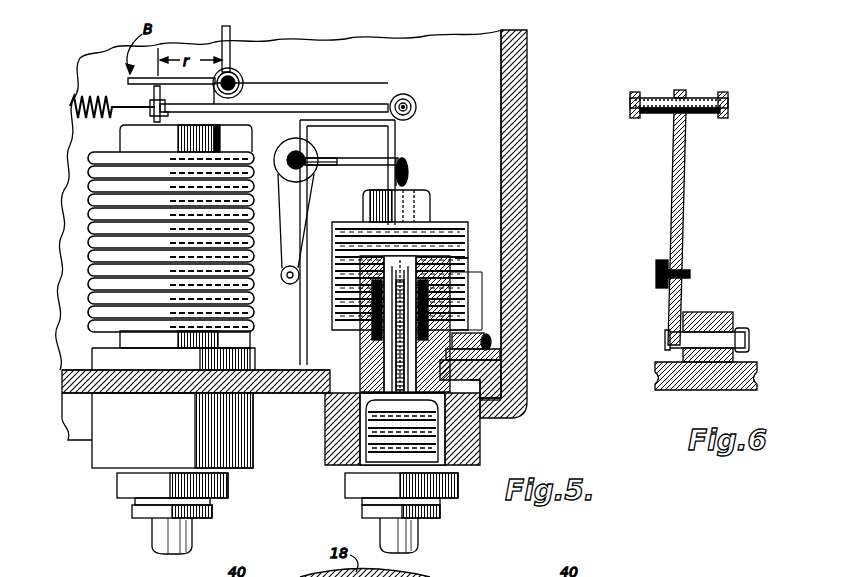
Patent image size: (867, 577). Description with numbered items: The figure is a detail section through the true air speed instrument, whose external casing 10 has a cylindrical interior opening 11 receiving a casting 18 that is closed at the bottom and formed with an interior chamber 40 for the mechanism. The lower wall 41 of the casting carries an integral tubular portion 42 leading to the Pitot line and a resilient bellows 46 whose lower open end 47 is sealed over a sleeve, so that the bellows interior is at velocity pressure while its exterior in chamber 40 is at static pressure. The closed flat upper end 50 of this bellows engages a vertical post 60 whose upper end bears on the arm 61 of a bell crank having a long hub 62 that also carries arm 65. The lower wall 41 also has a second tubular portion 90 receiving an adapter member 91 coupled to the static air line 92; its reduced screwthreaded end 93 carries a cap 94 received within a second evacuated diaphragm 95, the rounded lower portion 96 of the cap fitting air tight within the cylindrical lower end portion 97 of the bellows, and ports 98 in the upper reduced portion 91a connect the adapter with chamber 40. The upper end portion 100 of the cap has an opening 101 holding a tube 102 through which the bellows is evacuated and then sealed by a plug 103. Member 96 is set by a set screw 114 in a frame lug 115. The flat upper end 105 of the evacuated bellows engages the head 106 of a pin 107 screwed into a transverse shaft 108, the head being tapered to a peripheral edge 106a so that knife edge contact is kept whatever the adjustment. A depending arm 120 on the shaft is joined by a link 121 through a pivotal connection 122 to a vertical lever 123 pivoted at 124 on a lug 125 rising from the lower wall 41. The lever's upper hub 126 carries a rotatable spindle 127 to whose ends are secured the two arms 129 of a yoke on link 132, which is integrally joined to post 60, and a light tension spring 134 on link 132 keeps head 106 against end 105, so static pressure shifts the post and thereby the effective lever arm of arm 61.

In FIG. 5, the external casing 10 is at (528, 50).
In FIG. 5, the cylindrical interior opening 11 is at (506, 100).
In FIG. 5, the chamber 40 is at (498, 116).
In FIG. 5, the lower wall 41 is at (287, 395).
In FIG. 6, the lower wall 41 is at (744, 388).
In FIG. 5, the casting 18 is at (302, 395).
In FIG. 5, the tubular portion 42 is at (112, 443).
In FIG. 5, the bellows 46 is at (100, 200).
In FIG. 5, the lower open end 47 is at (145, 335).
In FIG. 5, the upper end 50 is at (120, 128).
In FIG. 5, the vertical post 60 is at (128, 88).
In FIG. 5, the arm 61 is at (150, 78).
In FIG. 5, the hub 62 is at (244, 80).
In FIG. 5, the arm 65 is at (232, 30).
In FIG. 5, the tension spring 134 is at (74, 96).
In FIG. 5, the link 132 is at (304, 102).
In FIG. 5, the arms 129 is at (360, 104).
In FIG. 6, the arms 129 is at (636, 92).
In FIG. 5, the hub 126 is at (406, 96).
In FIG. 6, the hub 126 is at (698, 98).
In FIG. 5, the spindle 127 is at (416, 101).
In FIG. 6, the spindle 127 is at (660, 98).
In FIG. 5, the lever 123 is at (392, 133).
In FIG. 6, the lever 123 is at (686, 214).
In FIG. 5, the depending arm 120 is at (296, 220).
In FIG. 5, the shaft 108 is at (298, 152).
In FIG. 5, the link 121 is at (292, 284).
In FIG. 6, the link 121 is at (662, 262).
In FIG. 5, the pivotal connection 122 is at (468, 240).
In FIG. 6, the pivotal connection 122 is at (656, 274).
In FIG. 5, the pin 107 is at (378, 152).
In FIG. 5, the head 106 is at (410, 172).
In FIG. 5, the peripheral edge 106a is at (404, 186).
In FIG. 5, the upper end 105 is at (432, 194).
In FIG. 5, the cap 94 is at (470, 288).
In FIG. 5, the diaphragm 95 is at (478, 222).
In FIG. 5, the opening 101 is at (470, 262).
In FIG. 5, the upper end portion 100 is at (470, 284).
In FIG. 5, the lug 125 is at (475, 310).
In FIG. 6, the lug 125 is at (702, 312).
In FIG. 5, the tube 102 is at (452, 332).
In FIG. 5, the screwthreaded end 93 is at (486, 340).
In FIG. 5, the frame lug 115 is at (492, 344).
In FIG. 5, the set screw 114 is at (502, 356).
In FIG. 5, the upper reduced portion 91a is at (484, 384).
In FIG. 5, the ports 98 is at (332, 370).
In FIG. 5, the lower end portion 97 is at (358, 330).
In FIG. 5, the lower portion 96 is at (360, 345).
In FIG. 5, the plug 103 is at (362, 352).
In FIG. 5, the second tubular portion 90 is at (462, 446).
In FIG. 5, the adapter member 91 is at (436, 452).
In FIG. 5, the static air line 92 is at (422, 533).
In FIG. 6, the pivot 124 is at (664, 341).